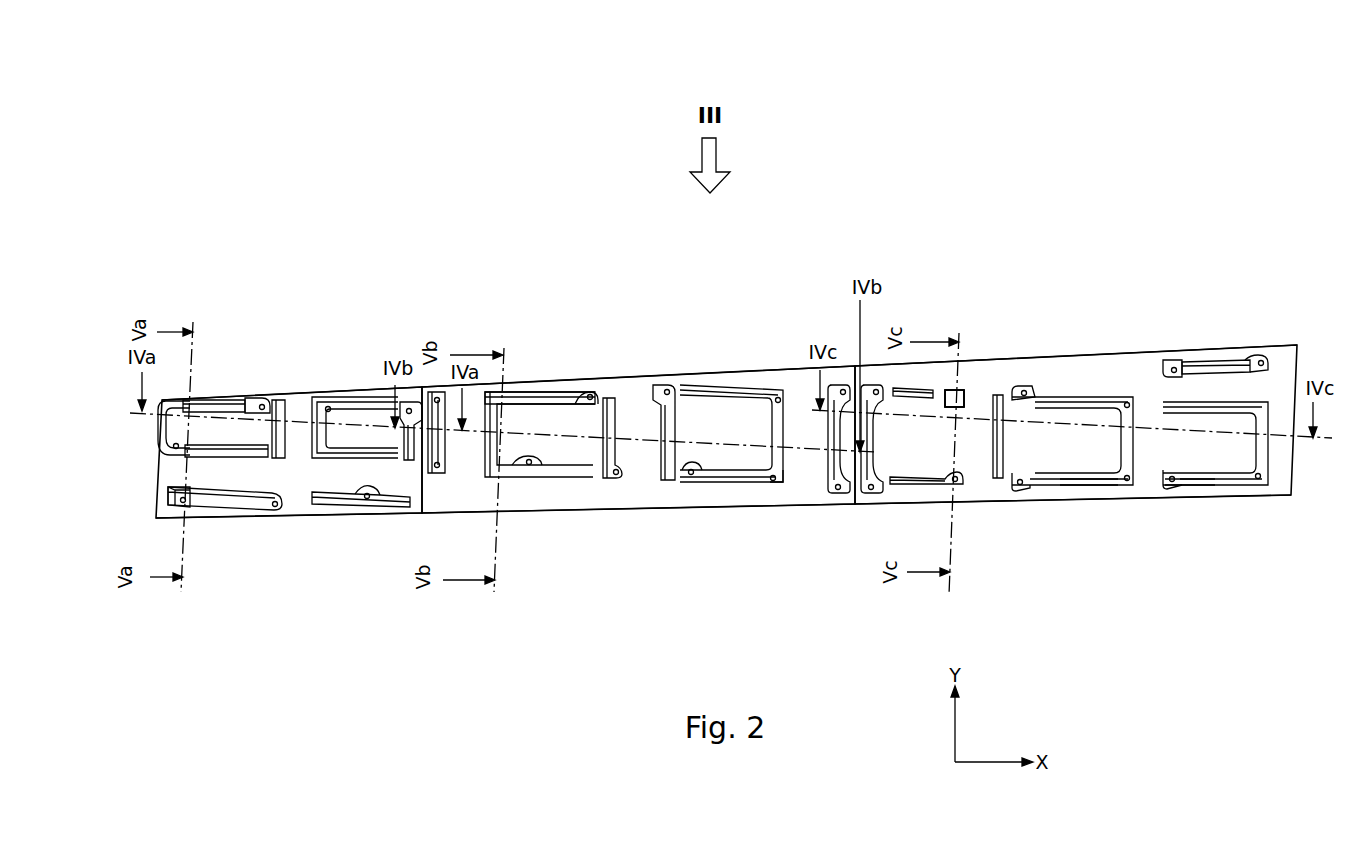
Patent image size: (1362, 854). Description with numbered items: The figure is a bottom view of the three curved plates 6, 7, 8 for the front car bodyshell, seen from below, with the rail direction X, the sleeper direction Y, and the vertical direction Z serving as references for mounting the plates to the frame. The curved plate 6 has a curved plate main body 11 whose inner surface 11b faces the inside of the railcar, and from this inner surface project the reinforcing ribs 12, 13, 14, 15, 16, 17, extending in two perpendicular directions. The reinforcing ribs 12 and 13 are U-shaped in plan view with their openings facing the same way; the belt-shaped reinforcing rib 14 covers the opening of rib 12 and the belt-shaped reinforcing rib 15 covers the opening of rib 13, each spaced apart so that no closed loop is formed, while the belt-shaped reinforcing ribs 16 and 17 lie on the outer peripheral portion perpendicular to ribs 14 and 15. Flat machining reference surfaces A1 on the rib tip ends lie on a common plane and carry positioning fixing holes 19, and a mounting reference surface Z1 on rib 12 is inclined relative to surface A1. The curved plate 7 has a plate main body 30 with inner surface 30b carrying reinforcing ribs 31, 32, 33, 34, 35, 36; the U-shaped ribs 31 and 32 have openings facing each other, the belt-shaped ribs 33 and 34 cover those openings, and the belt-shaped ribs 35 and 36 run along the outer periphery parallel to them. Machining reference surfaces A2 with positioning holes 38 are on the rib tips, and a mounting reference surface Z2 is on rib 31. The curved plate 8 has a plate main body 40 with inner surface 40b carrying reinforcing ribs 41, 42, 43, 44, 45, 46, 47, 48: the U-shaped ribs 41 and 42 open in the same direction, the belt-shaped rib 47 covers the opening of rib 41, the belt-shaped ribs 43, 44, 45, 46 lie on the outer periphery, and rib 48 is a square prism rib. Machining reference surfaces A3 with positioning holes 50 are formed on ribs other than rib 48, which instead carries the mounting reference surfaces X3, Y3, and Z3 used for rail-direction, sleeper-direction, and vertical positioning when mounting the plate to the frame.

The curved plate 6 is at (340, 358).
The curved plate 7 is at (715, 333).
The curved plate 8 is at (1142, 340).
The plate main body 11 is at (298, 393).
The inner surface 11b is at (290, 507).
The reinforcing rib 12 is at (220, 404).
The reinforcing rib 13 is at (363, 397).
The reinforcing rib 14 is at (276, 400).
The reinforcing rib 15 is at (410, 404).
The reinforcing rib 16 is at (242, 506).
The reinforcing rib 17 is at (380, 502).
The positioning fixing hole 19 is at (186, 503).
The plate main body 30 is at (625, 375).
The inner surface 30b is at (637, 500).
The reinforcing rib 31 is at (548, 393).
The reinforcing rib 32 is at (740, 392).
The reinforcing rib 33 is at (608, 400).
The reinforcing rib 34 is at (663, 388).
The reinforcing rib 35 is at (840, 385).
The reinforcing rib 36 is at (437, 473).
The positioning hole 38 is at (775, 484).
The plate main body 40 is at (1108, 352).
The inner surface 40b is at (1147, 490).
The reinforcing rib 41 is at (1080, 395).
The reinforcing rib 42 is at (1237, 486).
The reinforcing rib 43 is at (871, 494).
The reinforcing rib 44 is at (925, 485).
The reinforcing rib 45 is at (1222, 362).
The reinforcing rib 46 is at (915, 389).
The reinforcing rib 47 is at (998, 480).
The reinforcing rib 48 is at (957, 409).
The positioning hole 50 is at (1026, 484).
The machining reference surface A1 is at (252, 403).
The machining reference surface A2 is at (534, 468).
The machining reference surface A3 is at (1116, 486).
The mounting reference surface X3 is at (966, 403).
The mounting reference surface Y3 is at (955, 398).
The mounting reference surface Z1 is at (165, 405).
The mounting reference surface Z2 is at (486, 452).
The mounting reference surface Z3 is at (947, 397).